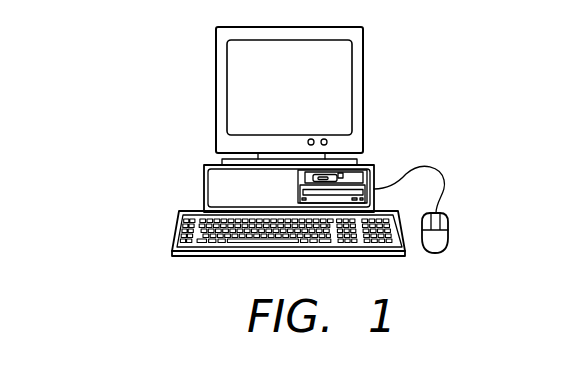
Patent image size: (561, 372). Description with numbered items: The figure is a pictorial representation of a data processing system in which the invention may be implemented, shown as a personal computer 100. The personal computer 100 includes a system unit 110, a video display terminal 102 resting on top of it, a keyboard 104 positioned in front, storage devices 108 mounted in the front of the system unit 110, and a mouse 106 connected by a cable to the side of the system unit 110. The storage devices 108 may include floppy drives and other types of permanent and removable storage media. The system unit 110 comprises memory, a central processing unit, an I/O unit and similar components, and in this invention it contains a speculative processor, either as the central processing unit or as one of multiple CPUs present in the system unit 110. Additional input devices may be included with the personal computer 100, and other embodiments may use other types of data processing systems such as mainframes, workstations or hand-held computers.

The personal computer 100 is at (108, 86).
The video display terminal 102 is at (234, 89).
The keyboard 104 is at (200, 234).
The mouse 106 is at (438, 253).
The storage devices 108 is at (352, 173).
The system unit 110 is at (204, 190).